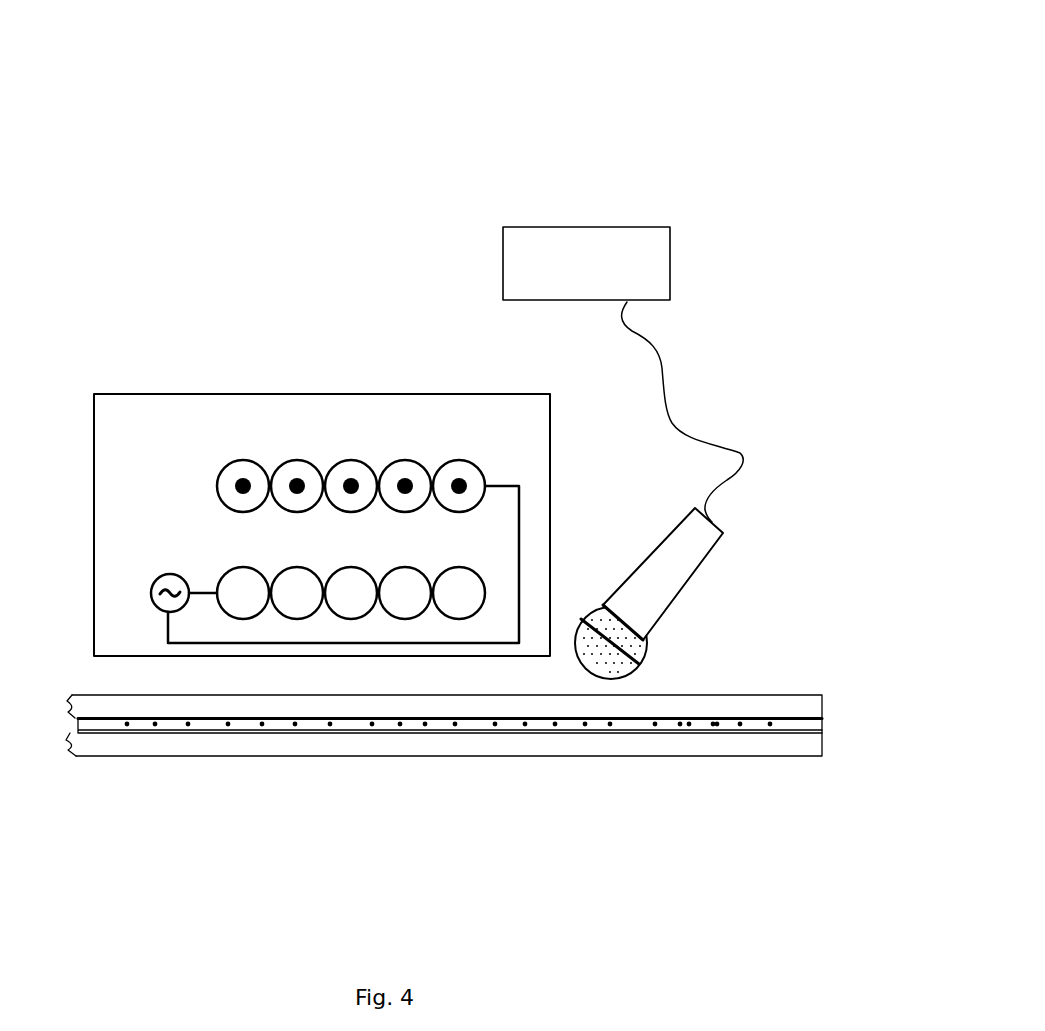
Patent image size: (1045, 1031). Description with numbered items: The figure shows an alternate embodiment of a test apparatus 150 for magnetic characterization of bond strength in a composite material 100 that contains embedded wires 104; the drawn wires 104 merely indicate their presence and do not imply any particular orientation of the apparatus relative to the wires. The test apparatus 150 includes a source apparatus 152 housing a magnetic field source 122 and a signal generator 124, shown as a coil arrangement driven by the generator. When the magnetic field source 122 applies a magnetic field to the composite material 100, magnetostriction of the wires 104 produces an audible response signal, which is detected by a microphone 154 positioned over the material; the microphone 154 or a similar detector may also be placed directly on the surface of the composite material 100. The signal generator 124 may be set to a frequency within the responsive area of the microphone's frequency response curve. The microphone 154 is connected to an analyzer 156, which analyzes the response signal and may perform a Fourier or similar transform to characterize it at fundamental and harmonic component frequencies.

The composite material 100 is at (125, 754).
The wires 104 is at (655, 727).
The magnetic field source 122 is at (433, 444).
The signal generator 124 is at (175, 576).
The test apparatus 150 is at (642, 351).
The source apparatus 152 is at (402, 393).
The microphone 154 is at (683, 592).
The analyzer 156 is at (544, 226).